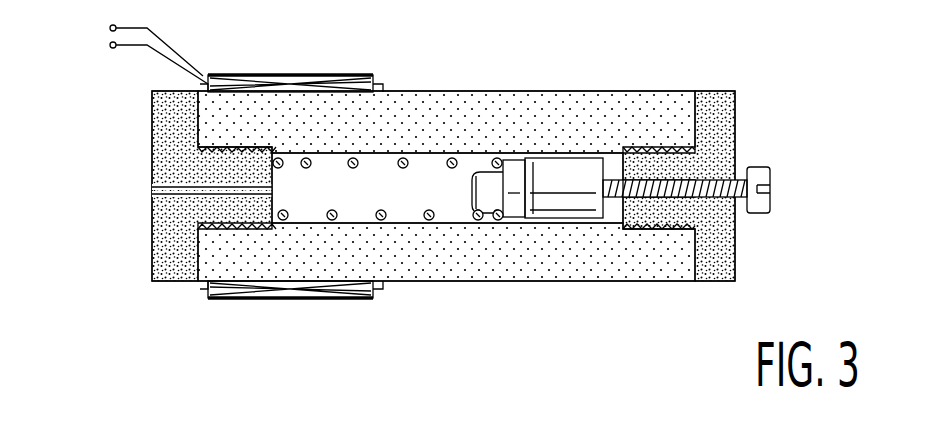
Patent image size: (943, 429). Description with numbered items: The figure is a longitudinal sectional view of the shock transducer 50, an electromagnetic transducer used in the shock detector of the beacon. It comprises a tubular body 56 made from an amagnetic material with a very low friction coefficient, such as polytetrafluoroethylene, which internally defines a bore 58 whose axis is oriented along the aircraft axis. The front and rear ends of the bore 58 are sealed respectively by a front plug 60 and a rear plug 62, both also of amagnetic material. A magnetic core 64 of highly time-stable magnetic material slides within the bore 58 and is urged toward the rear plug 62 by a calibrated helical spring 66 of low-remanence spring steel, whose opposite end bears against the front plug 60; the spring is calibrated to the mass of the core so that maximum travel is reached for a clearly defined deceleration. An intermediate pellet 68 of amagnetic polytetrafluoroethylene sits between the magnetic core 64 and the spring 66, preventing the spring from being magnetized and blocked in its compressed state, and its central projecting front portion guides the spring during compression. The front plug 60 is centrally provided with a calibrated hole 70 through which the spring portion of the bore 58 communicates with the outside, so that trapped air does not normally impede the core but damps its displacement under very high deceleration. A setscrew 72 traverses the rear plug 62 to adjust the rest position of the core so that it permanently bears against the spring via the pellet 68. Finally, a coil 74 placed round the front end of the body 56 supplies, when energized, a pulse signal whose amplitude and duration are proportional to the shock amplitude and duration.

The shock transducer 50 is at (438, 76).
The tubular body 56 is at (570, 115).
The bore 58 is at (322, 158).
The front plug 60 is at (167, 186).
The rear plug 62 is at (718, 130).
The magnetic core 64 is at (578, 205).
The calibrated helical spring 66 is at (385, 217).
The intermediate pellet 68 is at (520, 205).
The calibrated hole 70 is at (150, 191).
The setscrew 72 is at (763, 170).
The coil 74 is at (263, 76).